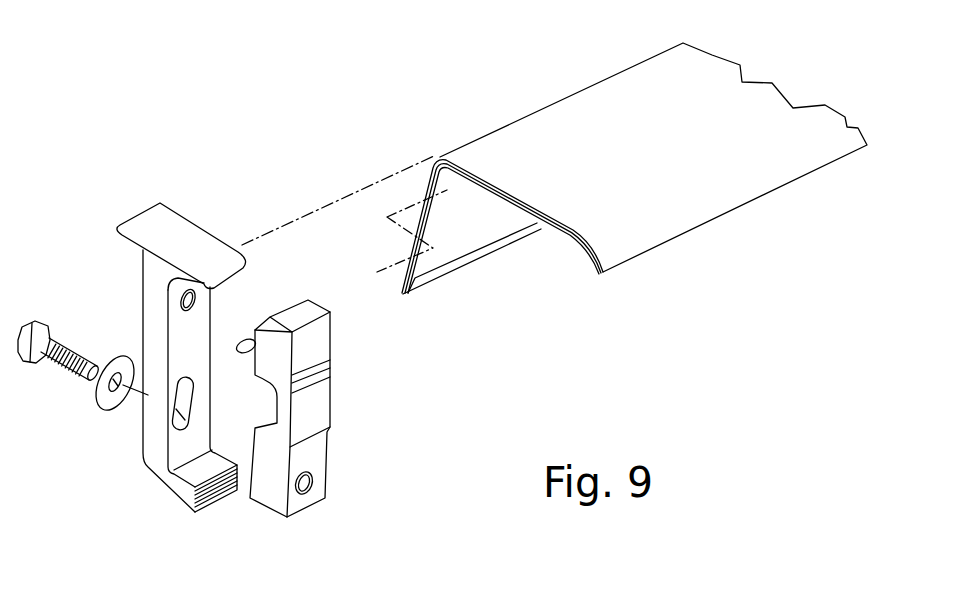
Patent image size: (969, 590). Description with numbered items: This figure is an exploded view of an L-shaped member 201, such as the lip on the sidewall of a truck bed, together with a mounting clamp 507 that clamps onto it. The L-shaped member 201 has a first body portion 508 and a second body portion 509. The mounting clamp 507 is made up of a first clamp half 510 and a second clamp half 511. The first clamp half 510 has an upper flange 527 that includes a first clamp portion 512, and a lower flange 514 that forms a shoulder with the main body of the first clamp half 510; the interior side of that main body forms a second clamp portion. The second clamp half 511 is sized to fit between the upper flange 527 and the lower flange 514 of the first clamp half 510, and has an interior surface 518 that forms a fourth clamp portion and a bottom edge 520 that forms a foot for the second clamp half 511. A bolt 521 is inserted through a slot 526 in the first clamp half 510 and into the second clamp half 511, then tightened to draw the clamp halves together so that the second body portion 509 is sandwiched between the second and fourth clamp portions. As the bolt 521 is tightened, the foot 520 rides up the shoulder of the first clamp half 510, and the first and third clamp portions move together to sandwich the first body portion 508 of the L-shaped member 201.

The L-shaped member 201 is at (554, 140).
The mounting clamp 507 is at (231, 383).
The first body portion 508 is at (647, 103).
The second body portion 509 is at (428, 192).
The first clamp half 510 is at (229, 373).
The second clamp half 511 is at (316, 432).
The first clamp portion 512 is at (212, 289).
The lower flange 514 is at (198, 472).
The interior surface 518 is at (240, 346).
The bottom edge 520 is at (270, 503).
The bolt 521 is at (36, 364).
The slot 526 is at (180, 412).
The upper flange 527 is at (220, 268).